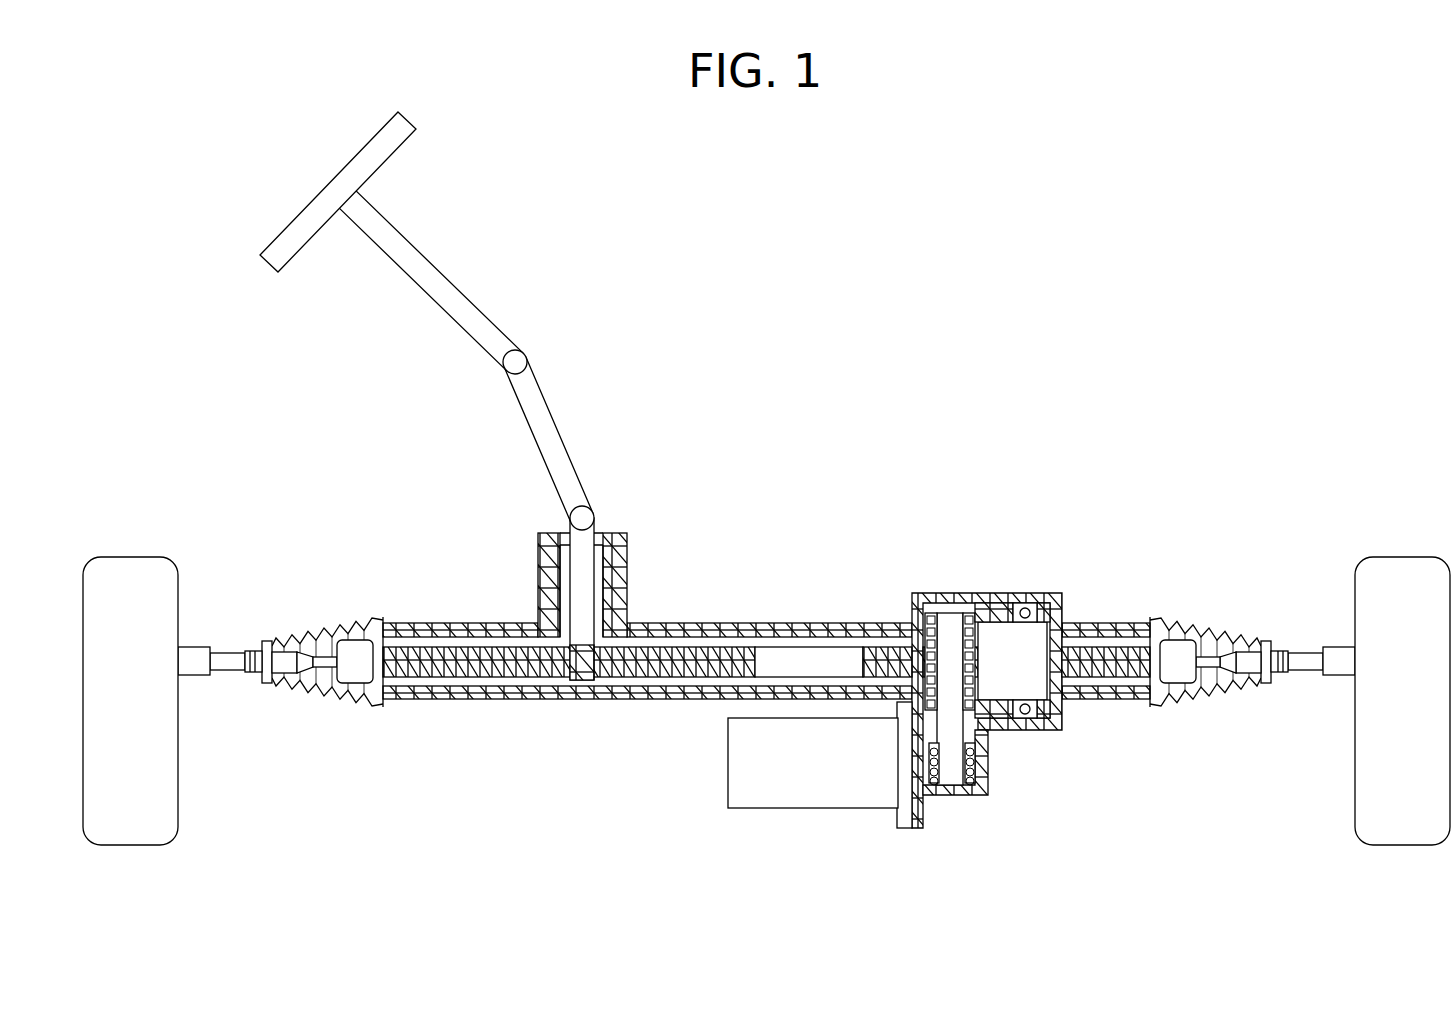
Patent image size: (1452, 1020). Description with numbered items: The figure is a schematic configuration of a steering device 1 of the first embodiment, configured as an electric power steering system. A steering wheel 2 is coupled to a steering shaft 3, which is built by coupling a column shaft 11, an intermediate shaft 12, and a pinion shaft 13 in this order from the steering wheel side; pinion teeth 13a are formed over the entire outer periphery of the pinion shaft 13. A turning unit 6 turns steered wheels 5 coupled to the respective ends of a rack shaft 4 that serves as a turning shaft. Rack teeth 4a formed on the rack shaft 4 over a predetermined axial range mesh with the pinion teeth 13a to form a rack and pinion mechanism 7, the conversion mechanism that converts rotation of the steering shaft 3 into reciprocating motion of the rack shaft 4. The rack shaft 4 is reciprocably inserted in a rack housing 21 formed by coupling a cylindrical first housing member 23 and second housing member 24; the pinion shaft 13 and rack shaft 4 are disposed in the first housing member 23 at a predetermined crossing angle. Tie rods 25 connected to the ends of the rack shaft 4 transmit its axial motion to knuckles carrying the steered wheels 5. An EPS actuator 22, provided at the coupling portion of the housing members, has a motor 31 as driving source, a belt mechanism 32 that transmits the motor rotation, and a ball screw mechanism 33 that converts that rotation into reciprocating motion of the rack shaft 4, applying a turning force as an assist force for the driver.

The steering device 1 is at (1177, 201).
The steering wheel 2 is at (366, 146).
The steering shaft 3 is at (667, 447).
The column shaft 11 is at (501, 331).
The intermediate shaft 12 is at (556, 423).
The pinion shaft 13 is at (612, 533).
The pinion teeth 13a is at (588, 678).
The rack shaft 4 is at (812, 647).
The rack teeth 4a is at (507, 670).
The steered wheels 5 is at (127, 557).
The turning unit 6 is at (838, 397).
The rack and pinion mechanism 7 is at (600, 684).
The rack housing 21 is at (987, 644).
The EPS actuator 22 is at (1076, 843).
The first housing member 23 is at (940, 594).
The second housing member 24 is at (1012, 623).
The tie rods 25 is at (227, 663).
The motor 31 is at (817, 805).
The belt mechanism 32 is at (985, 773).
The ball screw mechanism 33 is at (1044, 712).